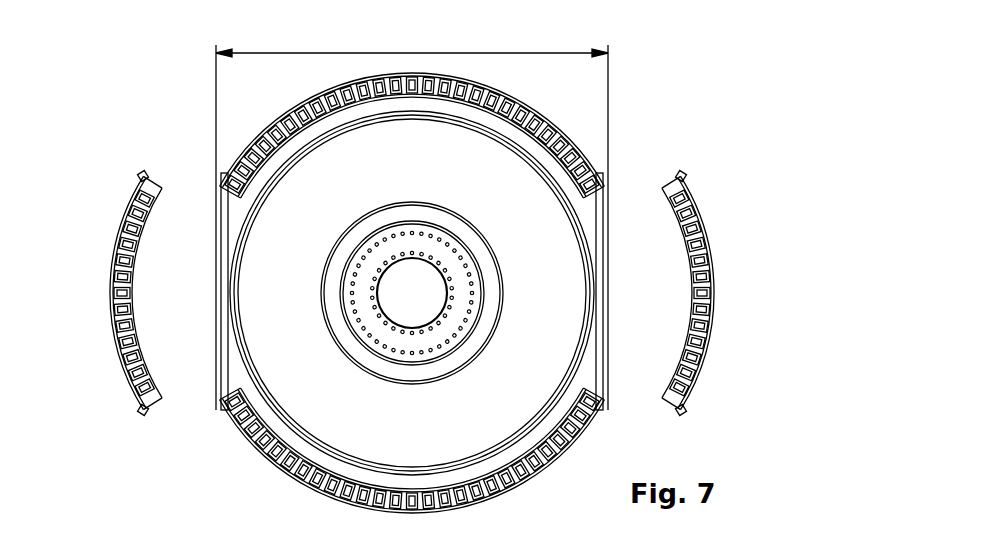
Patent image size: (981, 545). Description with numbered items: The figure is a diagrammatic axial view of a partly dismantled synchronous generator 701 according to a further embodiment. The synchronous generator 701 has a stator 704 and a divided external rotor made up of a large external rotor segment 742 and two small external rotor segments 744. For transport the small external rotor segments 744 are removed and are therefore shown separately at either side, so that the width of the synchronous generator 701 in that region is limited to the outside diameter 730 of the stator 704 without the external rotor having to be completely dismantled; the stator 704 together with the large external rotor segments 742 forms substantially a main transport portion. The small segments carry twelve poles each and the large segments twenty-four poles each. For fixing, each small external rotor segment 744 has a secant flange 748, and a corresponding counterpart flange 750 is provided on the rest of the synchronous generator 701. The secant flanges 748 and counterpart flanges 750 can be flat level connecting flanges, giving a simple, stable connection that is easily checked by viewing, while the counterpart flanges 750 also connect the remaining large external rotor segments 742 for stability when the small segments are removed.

The synchronous generator 701 is at (156, 88).
The stator 704 is at (537, 205).
The outside diameter 730 is at (412, 219).
The large external rotor segment 742 is at (425, 90).
The small external rotor segment 744 is at (114, 272).
The secant flange 748 is at (147, 330).
The counterpart flange 750 is at (220, 195).